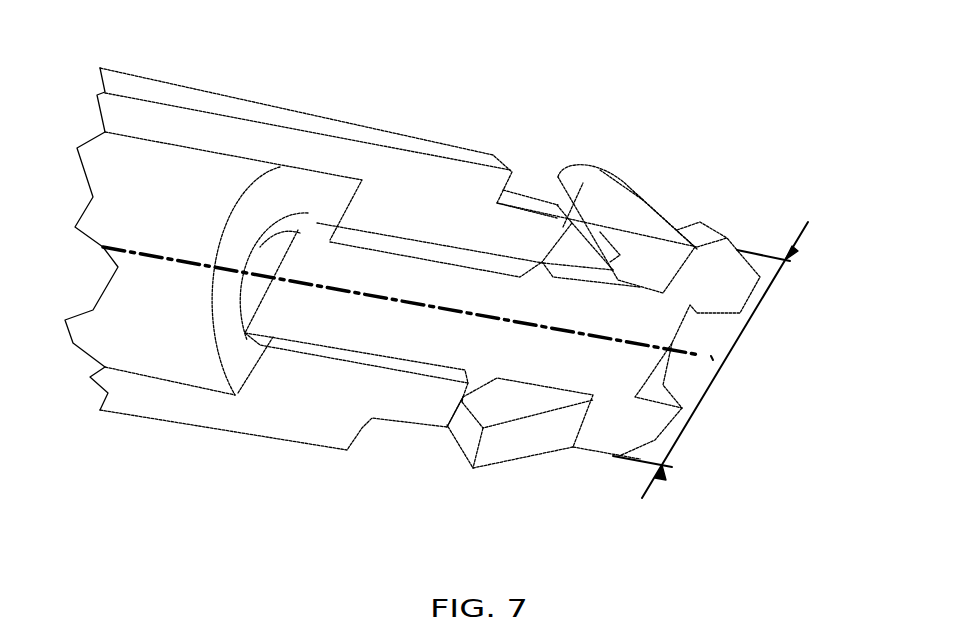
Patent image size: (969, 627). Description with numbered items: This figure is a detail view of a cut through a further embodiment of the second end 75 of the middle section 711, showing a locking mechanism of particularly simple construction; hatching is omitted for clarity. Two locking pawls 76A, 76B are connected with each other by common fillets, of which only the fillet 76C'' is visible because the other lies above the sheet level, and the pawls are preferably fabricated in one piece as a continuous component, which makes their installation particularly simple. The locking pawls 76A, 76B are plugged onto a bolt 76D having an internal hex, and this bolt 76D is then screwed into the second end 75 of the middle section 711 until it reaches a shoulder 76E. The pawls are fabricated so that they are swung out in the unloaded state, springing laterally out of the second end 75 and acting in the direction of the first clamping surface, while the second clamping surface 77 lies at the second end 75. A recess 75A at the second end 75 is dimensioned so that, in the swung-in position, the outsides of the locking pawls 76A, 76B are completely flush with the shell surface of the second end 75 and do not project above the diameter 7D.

The middle section 711 is at (178, 95).
The second end 75 is at (365, 83).
The recess 75A is at (500, 398).
The locking pawl 76A is at (495, 452).
The locking pawl 76B is at (650, 203).
The fillet 76C'' is at (619, 165).
The bolt 76D is at (655, 422).
The shoulder 76E is at (545, 259).
The second clamping surface 77 is at (583, 183).
The diameter 7D is at (737, 345).